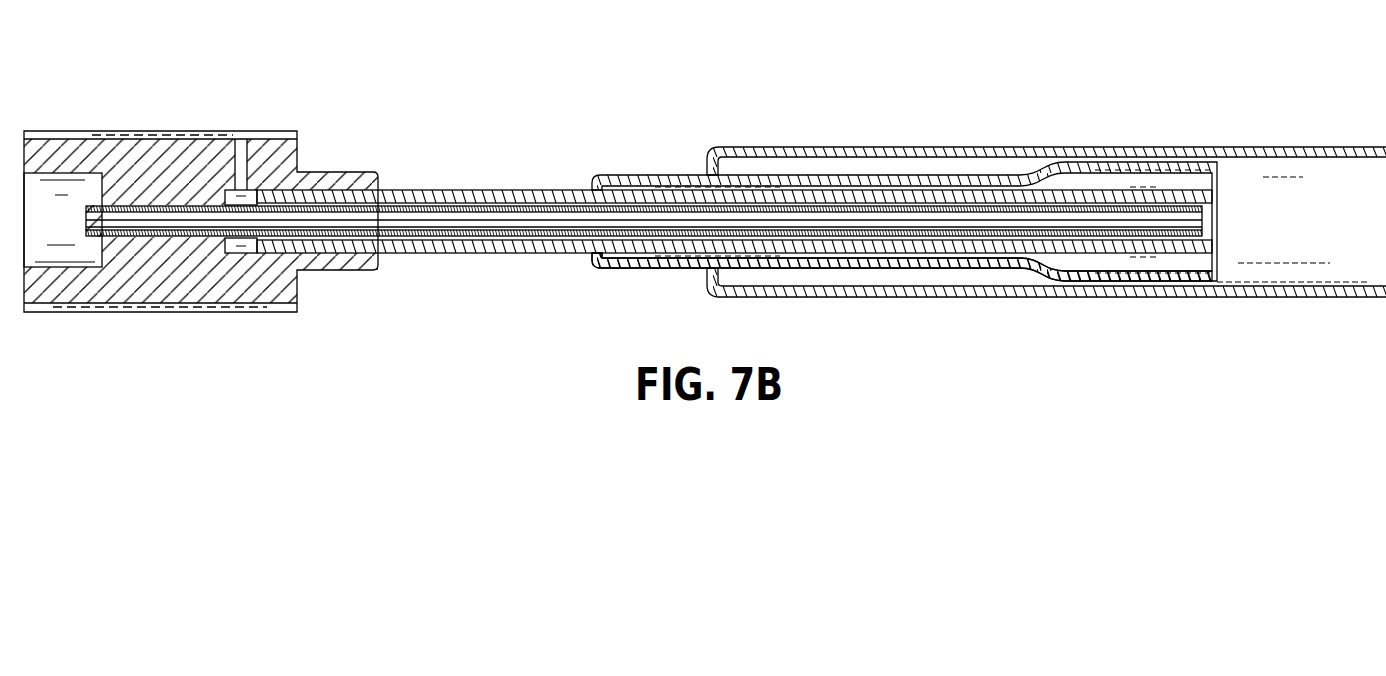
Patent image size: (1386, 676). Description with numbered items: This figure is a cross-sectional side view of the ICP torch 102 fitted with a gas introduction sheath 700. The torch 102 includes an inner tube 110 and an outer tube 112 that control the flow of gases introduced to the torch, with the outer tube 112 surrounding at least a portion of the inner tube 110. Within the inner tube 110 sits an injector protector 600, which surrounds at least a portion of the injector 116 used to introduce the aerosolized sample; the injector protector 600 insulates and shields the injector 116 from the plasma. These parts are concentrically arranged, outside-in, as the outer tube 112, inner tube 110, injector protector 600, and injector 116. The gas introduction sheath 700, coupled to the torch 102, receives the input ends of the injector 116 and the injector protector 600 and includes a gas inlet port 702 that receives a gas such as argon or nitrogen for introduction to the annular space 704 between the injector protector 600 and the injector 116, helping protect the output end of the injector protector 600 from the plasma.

The torch 102 is at (840, 46).
The inner tube 110 is at (655, 173).
The outer tube 112 is at (966, 146).
The injector 116 is at (498, 220).
The injector protector 600 is at (551, 188).
The gas introduction sheath 700 is at (146, 131).
The gas inlet port 702 is at (244, 139).
The annular space 704 is at (447, 204).